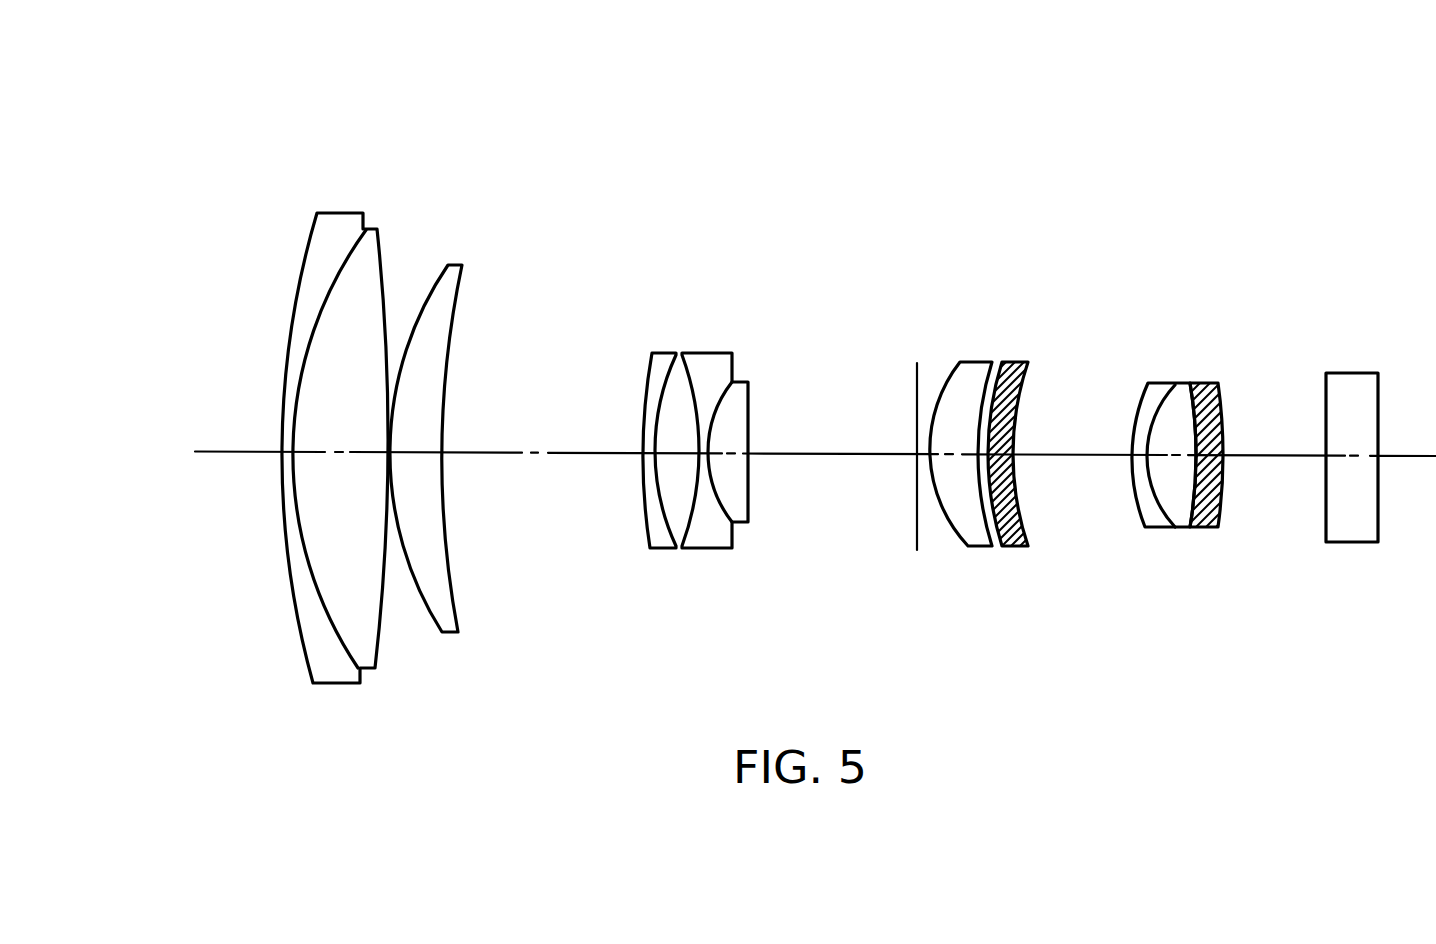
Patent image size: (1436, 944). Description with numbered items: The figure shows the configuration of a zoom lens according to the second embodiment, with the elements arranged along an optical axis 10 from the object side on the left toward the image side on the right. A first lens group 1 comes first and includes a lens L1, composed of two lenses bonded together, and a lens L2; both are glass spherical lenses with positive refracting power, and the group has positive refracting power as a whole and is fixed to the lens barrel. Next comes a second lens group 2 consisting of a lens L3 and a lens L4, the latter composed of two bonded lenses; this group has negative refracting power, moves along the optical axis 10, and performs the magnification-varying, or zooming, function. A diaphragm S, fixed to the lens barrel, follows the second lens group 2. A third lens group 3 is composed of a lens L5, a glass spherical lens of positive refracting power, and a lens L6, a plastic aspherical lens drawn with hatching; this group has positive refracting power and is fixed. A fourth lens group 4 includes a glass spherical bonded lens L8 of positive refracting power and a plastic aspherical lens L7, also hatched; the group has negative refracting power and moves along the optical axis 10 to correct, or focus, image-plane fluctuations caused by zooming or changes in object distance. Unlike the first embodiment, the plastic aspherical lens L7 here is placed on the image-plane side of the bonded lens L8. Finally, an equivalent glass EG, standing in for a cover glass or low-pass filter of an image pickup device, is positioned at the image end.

The optical axis 10 is at (225, 449).
The first lens group 1 is at (462, 113).
The second lens group 2 is at (733, 234).
The third lens group 3 is at (1055, 239).
The fourth lens group 4 is at (1232, 272).
The lens L1 is at (367, 247).
The lens L2 is at (450, 277).
The lens L3 is at (663, 370).
The lens L4 is at (708, 370).
The lens L5 is at (975, 373).
The lens L6 is at (1018, 372).
The plastic aspherical lens L7 is at (1207, 400).
The glass spherical bonded lens L8 is at (1180, 402).
The diaphragm S is at (915, 357).
The equivalent glass EG is at (1352, 387).